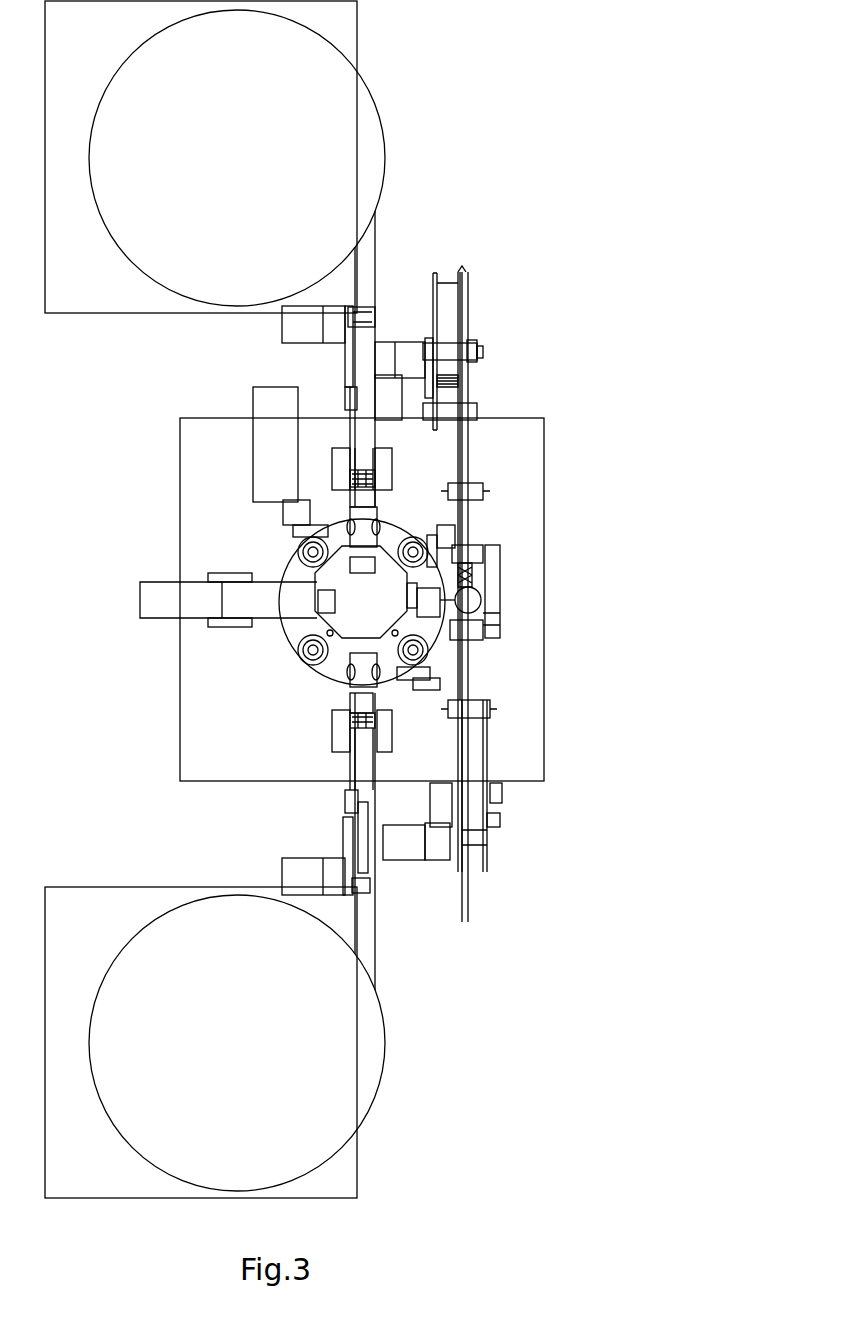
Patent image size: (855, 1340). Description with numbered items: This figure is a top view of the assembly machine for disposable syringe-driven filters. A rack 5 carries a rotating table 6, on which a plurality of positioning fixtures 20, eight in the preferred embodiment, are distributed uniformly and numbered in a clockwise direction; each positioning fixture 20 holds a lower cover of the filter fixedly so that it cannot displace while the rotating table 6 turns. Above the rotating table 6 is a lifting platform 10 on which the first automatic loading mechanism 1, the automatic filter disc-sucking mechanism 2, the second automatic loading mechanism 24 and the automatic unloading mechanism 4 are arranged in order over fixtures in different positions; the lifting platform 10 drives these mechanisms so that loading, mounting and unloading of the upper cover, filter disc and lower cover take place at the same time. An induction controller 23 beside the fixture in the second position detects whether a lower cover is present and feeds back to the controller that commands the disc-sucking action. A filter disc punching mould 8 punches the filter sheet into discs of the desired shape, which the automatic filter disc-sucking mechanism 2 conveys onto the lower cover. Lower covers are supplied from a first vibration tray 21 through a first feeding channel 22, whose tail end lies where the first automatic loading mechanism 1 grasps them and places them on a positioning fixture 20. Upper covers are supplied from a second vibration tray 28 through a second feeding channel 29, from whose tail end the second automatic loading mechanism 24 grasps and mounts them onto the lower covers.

The first automatic loading mechanism 1 is at (368, 522).
The automatic filter disc-sucking mechanism 2 is at (477, 567).
The automatic unloading mechanism 4 is at (282, 607).
The rack 5 is at (213, 555).
The rotating table 6 is at (297, 570).
The filter disc punching mould 8 is at (492, 628).
The lifting platform 10 is at (370, 680).
The positioning fixture 20 is at (420, 540).
The first vibration tray 21 is at (282, 120).
The first feeding channel 22 is at (373, 275).
The induction controller 23 is at (440, 552).
The second automatic loading mechanism 24 is at (365, 708).
The second vibration tray 28 is at (282, 1080).
The second feeding channel 29 is at (365, 922).